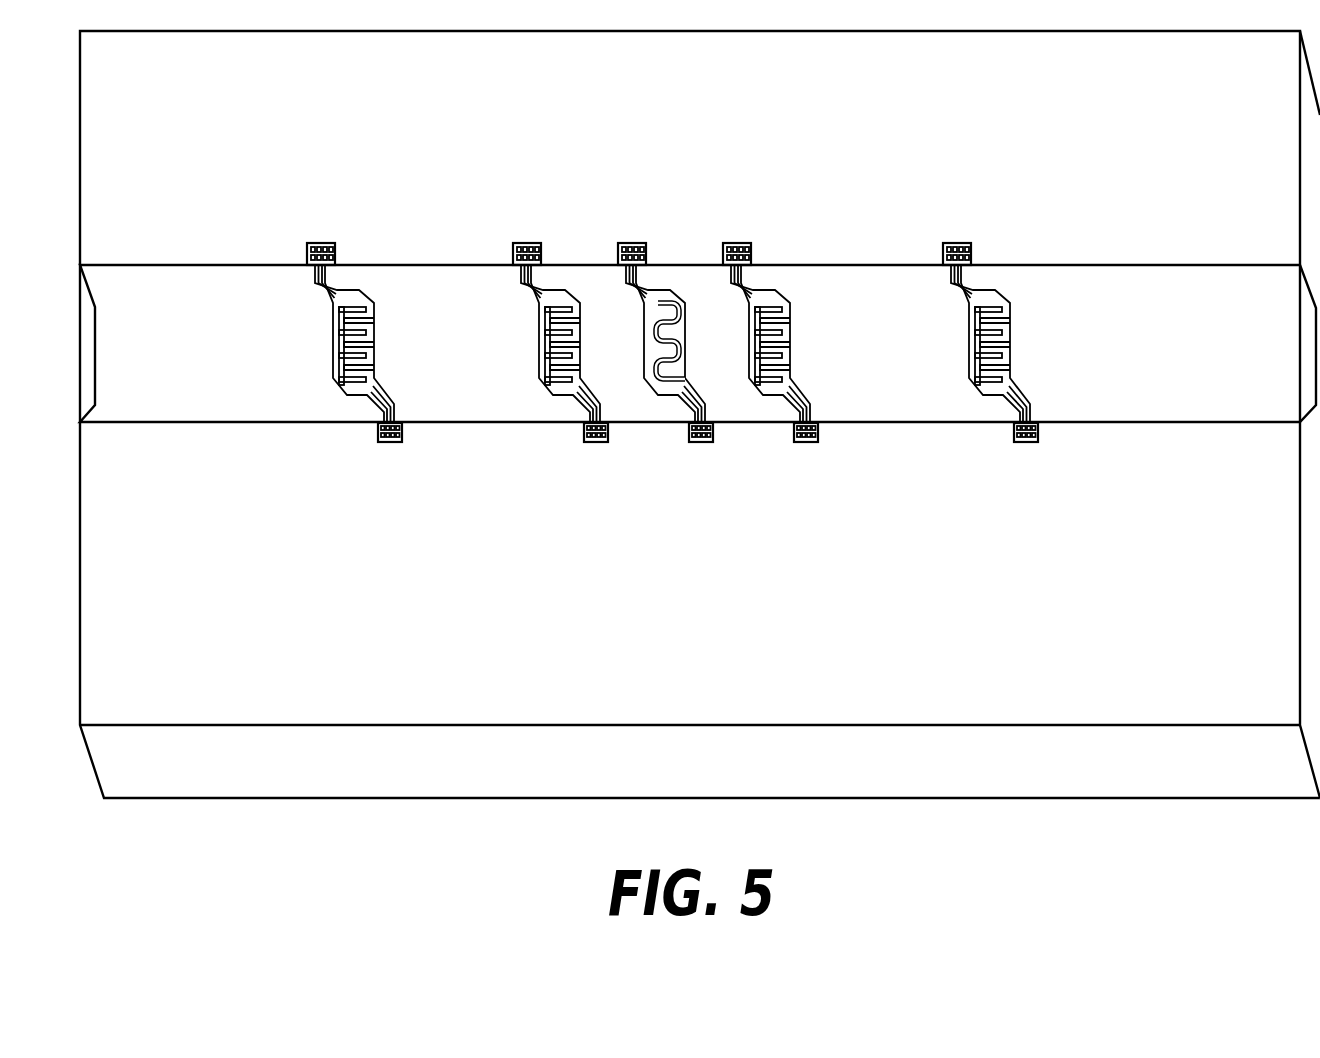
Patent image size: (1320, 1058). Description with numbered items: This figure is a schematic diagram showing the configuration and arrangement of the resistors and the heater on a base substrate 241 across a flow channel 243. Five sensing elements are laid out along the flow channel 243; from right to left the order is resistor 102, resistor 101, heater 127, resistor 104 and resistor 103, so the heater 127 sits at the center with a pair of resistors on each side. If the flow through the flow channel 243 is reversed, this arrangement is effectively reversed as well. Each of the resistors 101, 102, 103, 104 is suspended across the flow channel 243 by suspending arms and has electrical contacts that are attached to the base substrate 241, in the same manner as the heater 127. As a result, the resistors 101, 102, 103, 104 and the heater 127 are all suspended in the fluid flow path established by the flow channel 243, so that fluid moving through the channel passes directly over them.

The base substrate 241 is at (403, 125).
The flow channel 243 is at (230, 360).
The resistor 103 is at (375, 342).
The resistor 104 is at (580, 342).
The heater 127 is at (686, 342).
The resistor 101 is at (790, 342).
The resistor 102 is at (1012, 342).